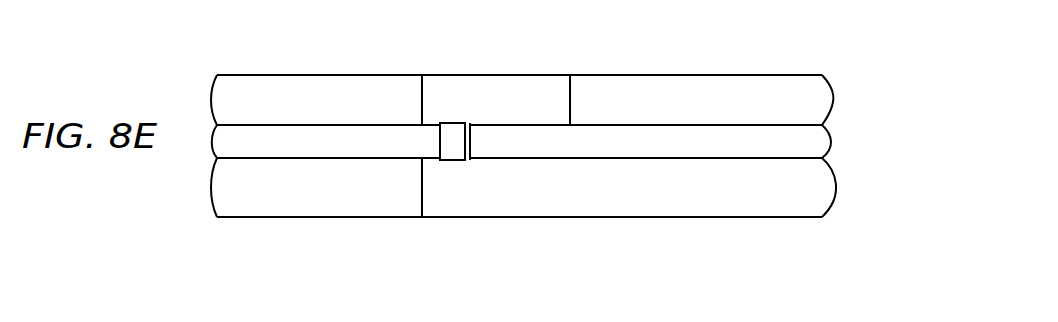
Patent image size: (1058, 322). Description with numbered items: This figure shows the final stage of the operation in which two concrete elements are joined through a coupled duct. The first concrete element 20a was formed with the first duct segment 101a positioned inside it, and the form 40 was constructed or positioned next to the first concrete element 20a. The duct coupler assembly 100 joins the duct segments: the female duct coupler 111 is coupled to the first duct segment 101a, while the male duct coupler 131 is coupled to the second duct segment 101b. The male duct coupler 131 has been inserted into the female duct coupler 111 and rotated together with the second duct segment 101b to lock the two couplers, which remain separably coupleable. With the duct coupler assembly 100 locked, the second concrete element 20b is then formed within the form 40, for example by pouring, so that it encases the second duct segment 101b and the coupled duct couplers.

The first concrete element 20a is at (237, 75).
The second concrete element 20b is at (802, 75).
The first duct segment 101a is at (298, 125).
The second duct segment 101b is at (570, 125).
The female duct coupler 111 is at (446, 125).
The male duct coupler 131 is at (470, 125).
The duct coupler assembly 100 is at (427, 172).
The form 40 is at (592, 217).